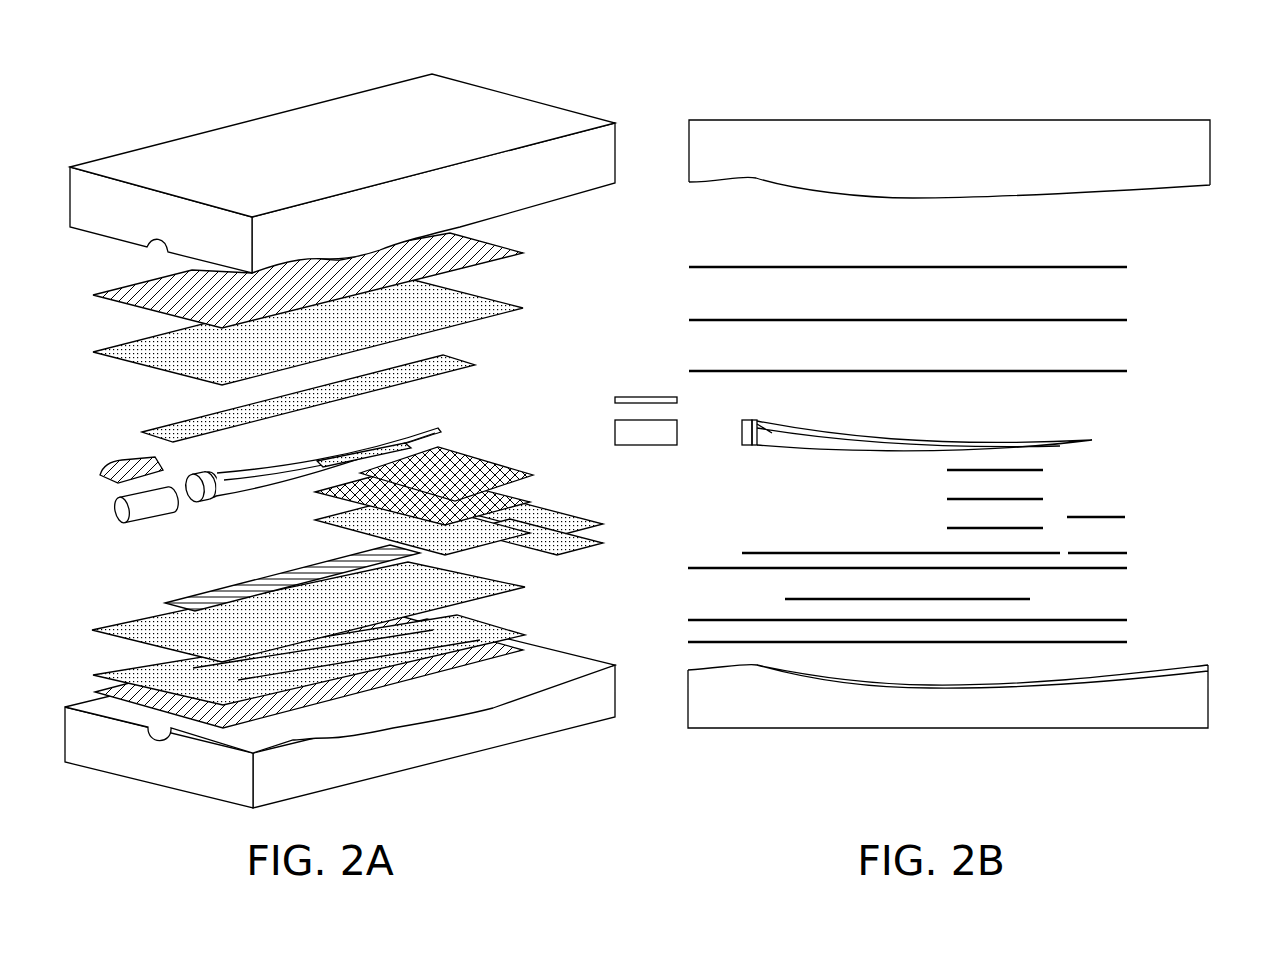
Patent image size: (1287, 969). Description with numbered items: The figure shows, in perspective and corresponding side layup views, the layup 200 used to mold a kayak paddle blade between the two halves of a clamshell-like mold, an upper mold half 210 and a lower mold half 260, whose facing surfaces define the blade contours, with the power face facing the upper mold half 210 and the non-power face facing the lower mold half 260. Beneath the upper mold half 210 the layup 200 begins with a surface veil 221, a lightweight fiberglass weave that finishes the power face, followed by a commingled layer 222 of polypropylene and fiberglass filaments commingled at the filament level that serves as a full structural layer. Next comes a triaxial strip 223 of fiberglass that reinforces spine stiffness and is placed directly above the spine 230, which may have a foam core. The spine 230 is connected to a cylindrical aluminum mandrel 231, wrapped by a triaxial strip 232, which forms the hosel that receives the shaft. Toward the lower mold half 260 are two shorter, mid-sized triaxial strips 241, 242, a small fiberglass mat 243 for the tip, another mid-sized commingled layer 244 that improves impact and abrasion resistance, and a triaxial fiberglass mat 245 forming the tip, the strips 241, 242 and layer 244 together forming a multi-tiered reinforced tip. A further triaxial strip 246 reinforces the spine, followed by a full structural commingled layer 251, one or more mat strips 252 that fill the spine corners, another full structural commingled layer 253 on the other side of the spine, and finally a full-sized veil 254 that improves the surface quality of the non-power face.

The layup 200 is at (838, 50).
The upper mold half 210 is at (1210, 125).
The surface veil 221 is at (1127, 267).
The commingled layer 222 is at (1127, 320).
The triaxial strip 223 is at (1127, 371).
The spine 230 is at (787, 448).
The mandrel 231 is at (615, 440).
The triaxial strip 232 is at (615, 400).
The triaxial strip 241 is at (950, 471).
The triaxial strip 242 is at (950, 500).
The mat 243 is at (1125, 517).
The commingled layer 244 is at (1043, 528).
The mat 245 is at (1127, 553).
The triaxial strip 246 is at (766, 552).
The commingled layer 251 is at (705, 568).
The mat strips 252 is at (1017, 599).
The commingled layer 253 is at (1127, 620).
The veil 254 is at (1127, 642).
The lower mold half 260 is at (1208, 707).